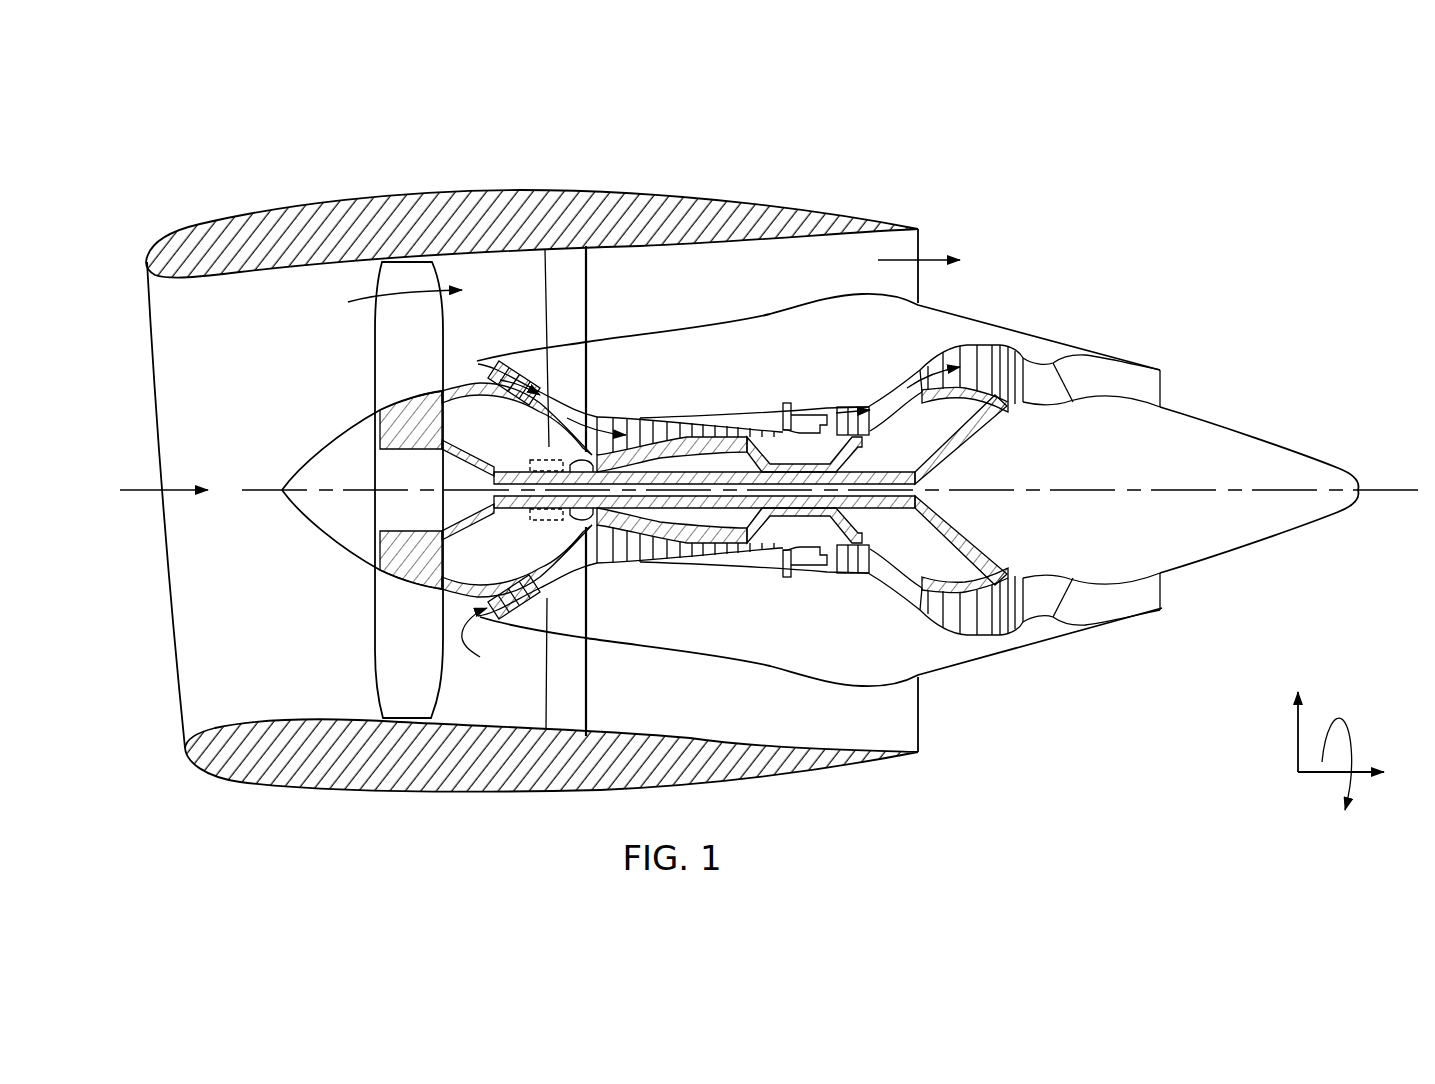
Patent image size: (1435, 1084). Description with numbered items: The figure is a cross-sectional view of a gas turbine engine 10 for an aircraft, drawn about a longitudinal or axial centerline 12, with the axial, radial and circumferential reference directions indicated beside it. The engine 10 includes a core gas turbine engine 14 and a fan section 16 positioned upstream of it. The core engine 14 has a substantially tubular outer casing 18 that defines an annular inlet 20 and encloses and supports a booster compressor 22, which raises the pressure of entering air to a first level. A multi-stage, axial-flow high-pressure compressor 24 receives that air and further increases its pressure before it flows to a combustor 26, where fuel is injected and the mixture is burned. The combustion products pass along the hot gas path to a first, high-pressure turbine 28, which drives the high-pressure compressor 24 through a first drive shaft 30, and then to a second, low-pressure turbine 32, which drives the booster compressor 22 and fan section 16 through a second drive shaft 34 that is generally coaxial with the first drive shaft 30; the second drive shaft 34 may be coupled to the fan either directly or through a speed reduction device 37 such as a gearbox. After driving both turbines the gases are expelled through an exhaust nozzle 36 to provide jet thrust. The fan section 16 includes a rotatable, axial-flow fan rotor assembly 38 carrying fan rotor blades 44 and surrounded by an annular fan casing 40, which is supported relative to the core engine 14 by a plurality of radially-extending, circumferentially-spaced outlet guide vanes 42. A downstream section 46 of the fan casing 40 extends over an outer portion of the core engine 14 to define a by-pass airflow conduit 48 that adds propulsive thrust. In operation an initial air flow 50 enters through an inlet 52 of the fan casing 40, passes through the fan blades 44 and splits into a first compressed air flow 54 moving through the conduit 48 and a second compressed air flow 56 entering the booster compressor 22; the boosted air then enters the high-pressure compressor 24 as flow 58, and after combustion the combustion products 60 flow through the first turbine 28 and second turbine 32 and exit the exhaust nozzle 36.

The gas turbine engine 10 is at (1278, 170).
The longitudinal or axial centerline 12 is at (1112, 488).
The core gas turbine engine 14 is at (733, 395).
The fan section 16 is at (532, 481).
The outer casing 18 is at (802, 681).
The annular inlet 20 is at (478, 645).
The booster compressor 22 is at (540, 585).
The high pressure compressor 24 is at (610, 552).
The combustor 26 is at (808, 558).
The first (high pressure) turbine 28 is at (868, 562).
The first (high pressure) drive shaft 30 is at (826, 451).
The second (low pressure) turbine 32 is at (1000, 632).
The second (low pressure) drive shaft 34 is at (553, 461).
The exhaust nozzle 36 is at (1112, 366).
The speed reduction device 37 is at (555, 520).
The fan rotor assembly 38 is at (442, 449).
The fan casing 40 is at (392, 786).
The outlet guide vanes 42 is at (592, 280).
The fan rotor blades 44 is at (373, 620).
The downstream section of the fan casing 46 is at (766, 205).
The by-pass airflow conduit 48 is at (710, 290).
The initial air flow 50 is at (178, 480).
The inlet 52 is at (178, 662).
The first compressed air flow 54 is at (348, 302).
The second compressed air flow 56 is at (486, 374).
The air flow entering the high-pressure compressor 58 is at (597, 425).
The combustion products 60 is at (862, 416).